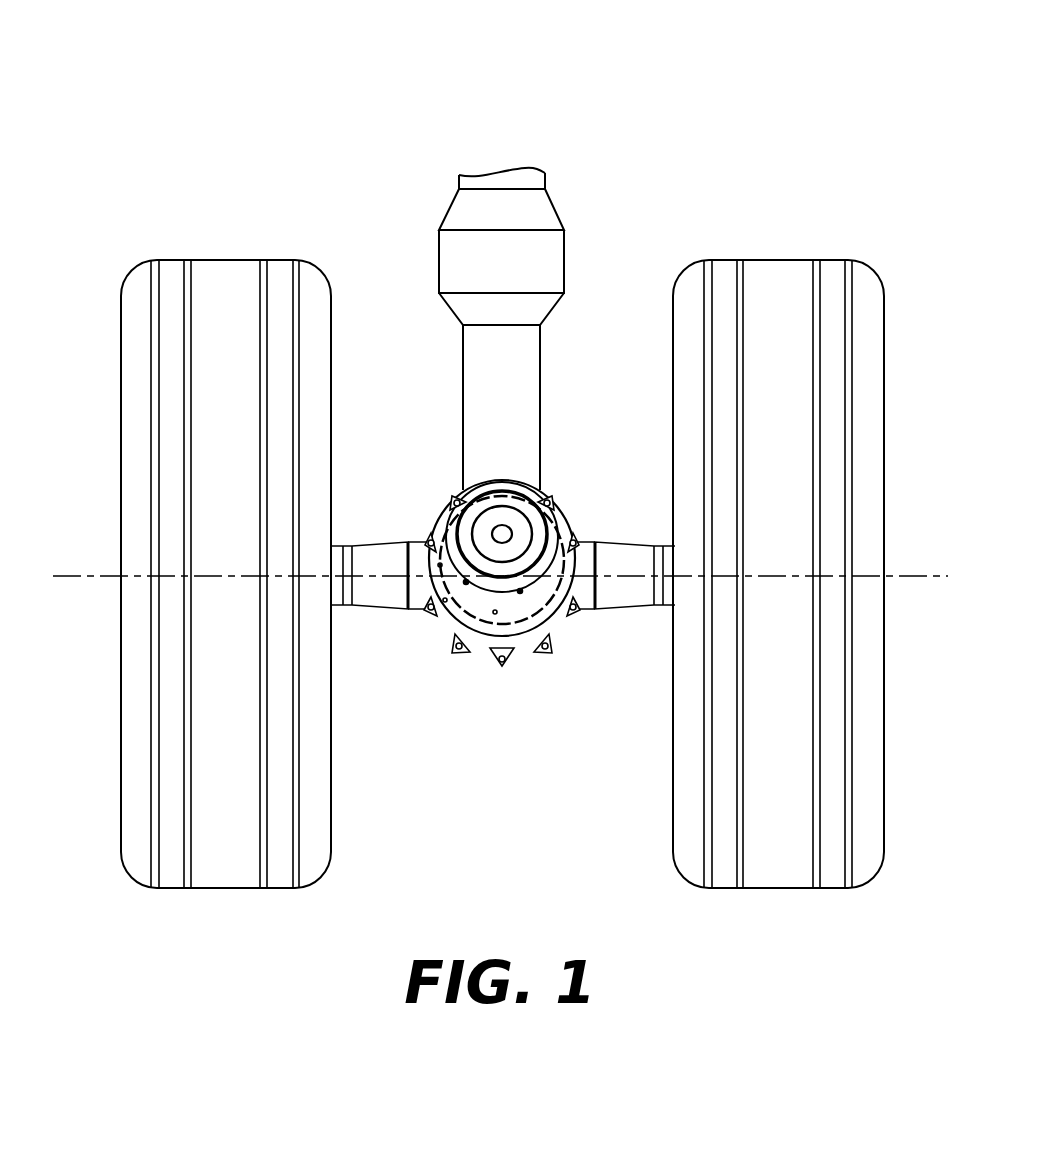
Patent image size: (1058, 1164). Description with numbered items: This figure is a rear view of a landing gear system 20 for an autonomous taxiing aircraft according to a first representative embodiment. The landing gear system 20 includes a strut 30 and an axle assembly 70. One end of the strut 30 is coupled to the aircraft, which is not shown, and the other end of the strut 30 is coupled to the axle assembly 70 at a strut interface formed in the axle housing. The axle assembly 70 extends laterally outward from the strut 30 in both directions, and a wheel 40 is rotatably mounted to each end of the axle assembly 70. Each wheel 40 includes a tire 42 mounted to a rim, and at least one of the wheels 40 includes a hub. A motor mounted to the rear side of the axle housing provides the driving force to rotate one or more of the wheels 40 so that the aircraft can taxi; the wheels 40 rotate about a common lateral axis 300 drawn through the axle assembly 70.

The landing gear system 20 is at (703, 78).
The strut 30 is at (557, 210).
The wheel 40 is at (501, 531).
The tire 42 is at (138, 282).
The axle assembly 70 is at (630, 604).
The axis of rotation 300 is at (935, 573).